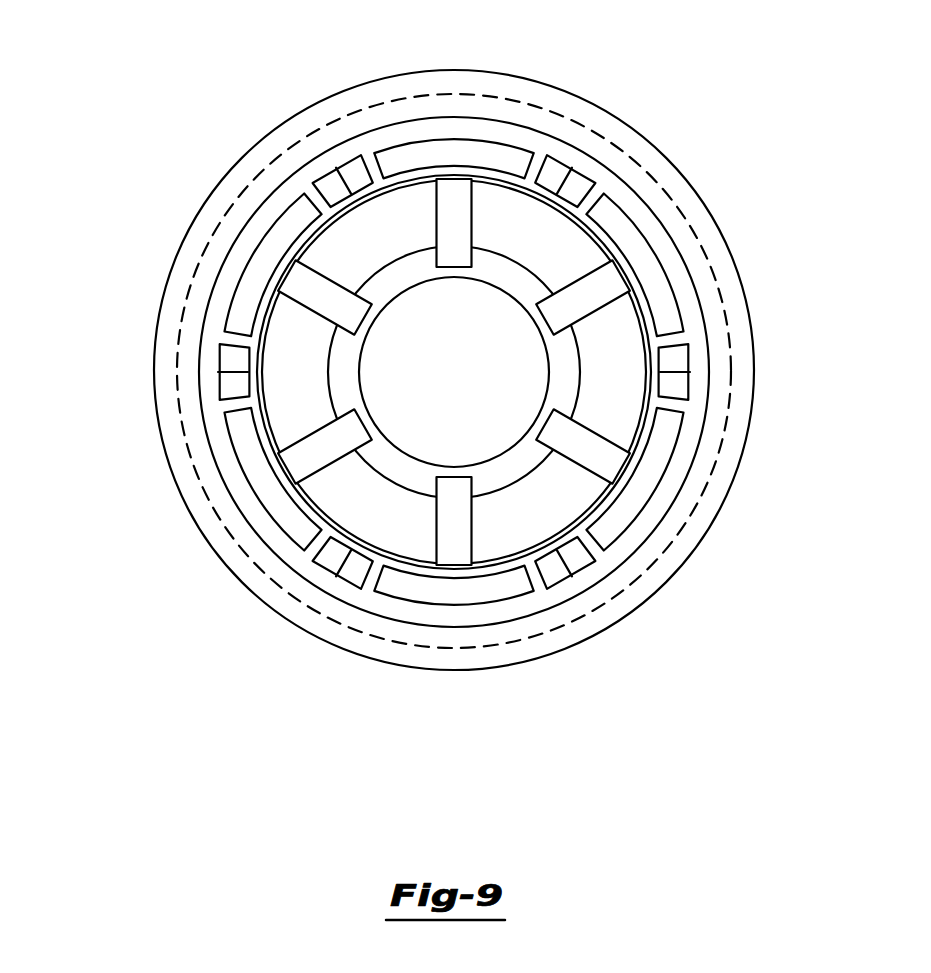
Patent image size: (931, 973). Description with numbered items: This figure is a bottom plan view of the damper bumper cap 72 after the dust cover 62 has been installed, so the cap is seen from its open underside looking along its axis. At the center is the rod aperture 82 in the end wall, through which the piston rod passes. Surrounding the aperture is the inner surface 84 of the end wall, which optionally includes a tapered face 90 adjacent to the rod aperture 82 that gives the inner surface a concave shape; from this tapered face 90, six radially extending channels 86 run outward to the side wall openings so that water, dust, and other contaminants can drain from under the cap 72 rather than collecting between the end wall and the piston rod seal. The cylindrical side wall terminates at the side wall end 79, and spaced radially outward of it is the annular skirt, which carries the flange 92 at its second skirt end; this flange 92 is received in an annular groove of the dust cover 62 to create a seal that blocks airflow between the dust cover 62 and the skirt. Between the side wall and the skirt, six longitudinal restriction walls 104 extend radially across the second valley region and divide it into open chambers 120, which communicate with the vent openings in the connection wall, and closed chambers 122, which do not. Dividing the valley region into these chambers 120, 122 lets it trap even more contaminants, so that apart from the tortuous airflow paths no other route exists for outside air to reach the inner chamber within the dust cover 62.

The damper bumper cap 72 is at (281, 73).
The dust cover 62 is at (163, 393).
The flange 92 is at (257, 187).
The side wall end 79 is at (647, 305).
The inner surface 84 is at (298, 343).
The tapered face 90 is at (410, 273).
The rod aperture 82 is at (486, 404).
The radially extending channels 86 is at (320, 282).
The closed chambers 122 is at (455, 150).
The longitudinal restriction walls 104 is at (308, 197).
The open chambers 120 is at (352, 170).